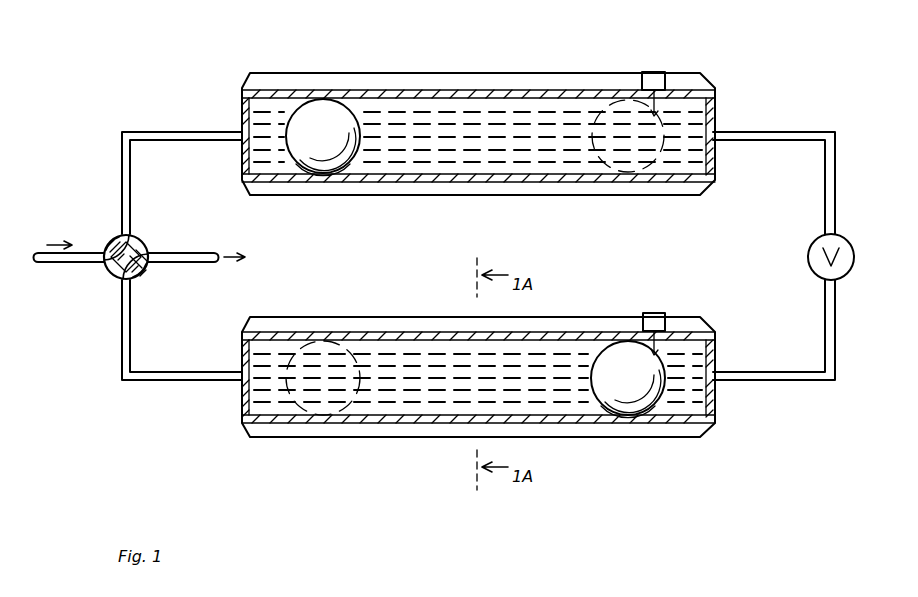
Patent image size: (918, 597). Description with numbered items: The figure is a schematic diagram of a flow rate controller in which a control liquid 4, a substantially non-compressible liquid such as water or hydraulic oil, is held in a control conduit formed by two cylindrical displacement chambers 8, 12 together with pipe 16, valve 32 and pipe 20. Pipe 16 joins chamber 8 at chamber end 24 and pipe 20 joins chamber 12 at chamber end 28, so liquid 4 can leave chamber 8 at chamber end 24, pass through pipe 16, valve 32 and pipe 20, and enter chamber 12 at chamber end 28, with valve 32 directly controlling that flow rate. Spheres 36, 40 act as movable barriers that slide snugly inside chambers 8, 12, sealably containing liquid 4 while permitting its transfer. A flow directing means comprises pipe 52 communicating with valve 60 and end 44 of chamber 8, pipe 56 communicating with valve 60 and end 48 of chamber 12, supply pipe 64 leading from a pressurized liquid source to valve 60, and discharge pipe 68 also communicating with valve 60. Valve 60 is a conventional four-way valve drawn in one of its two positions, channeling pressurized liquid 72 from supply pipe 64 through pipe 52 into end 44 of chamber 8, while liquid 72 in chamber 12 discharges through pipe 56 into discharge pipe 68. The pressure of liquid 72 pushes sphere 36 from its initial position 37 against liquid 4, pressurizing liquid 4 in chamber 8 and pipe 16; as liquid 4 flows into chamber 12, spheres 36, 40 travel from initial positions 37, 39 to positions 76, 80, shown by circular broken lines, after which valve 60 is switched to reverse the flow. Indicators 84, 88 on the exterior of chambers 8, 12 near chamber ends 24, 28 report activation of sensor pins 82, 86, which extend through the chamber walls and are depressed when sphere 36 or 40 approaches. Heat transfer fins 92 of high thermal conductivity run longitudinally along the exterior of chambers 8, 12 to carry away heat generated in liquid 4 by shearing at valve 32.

The liquid 4 is at (527, 150).
The displacement chamber 8 is at (508, 90).
The displacement chamber 12 is at (668, 424).
The pipe 16 is at (836, 166).
The pipe 20 is at (836, 336).
The chamber end 24 is at (716, 113).
The chamber end 28 is at (716, 394).
The valve 32 is at (855, 257).
The sphere 36 is at (334, 170).
The initial position 37 is at (325, 99).
The initial position 39 is at (632, 416).
The sphere 40 is at (600, 352).
The end 44 is at (244, 106).
The end 48 is at (244, 400).
The pipe 52 is at (122, 172).
The pipe 56 is at (122, 352).
The valve 60 is at (112, 276).
The supply pipe 64 is at (84, 252).
The discharge pipe 68 is at (185, 263).
The pressurized liquid 72 is at (270, 152).
The position 76 is at (655, 174).
The position 80 is at (288, 342).
The sensor element 82 is at (668, 112).
The indicator 84 is at (651, 72).
The sensor element 86 is at (680, 332).
The indicator 88 is at (652, 313).
The heat transfer fins 92 is at (414, 80).